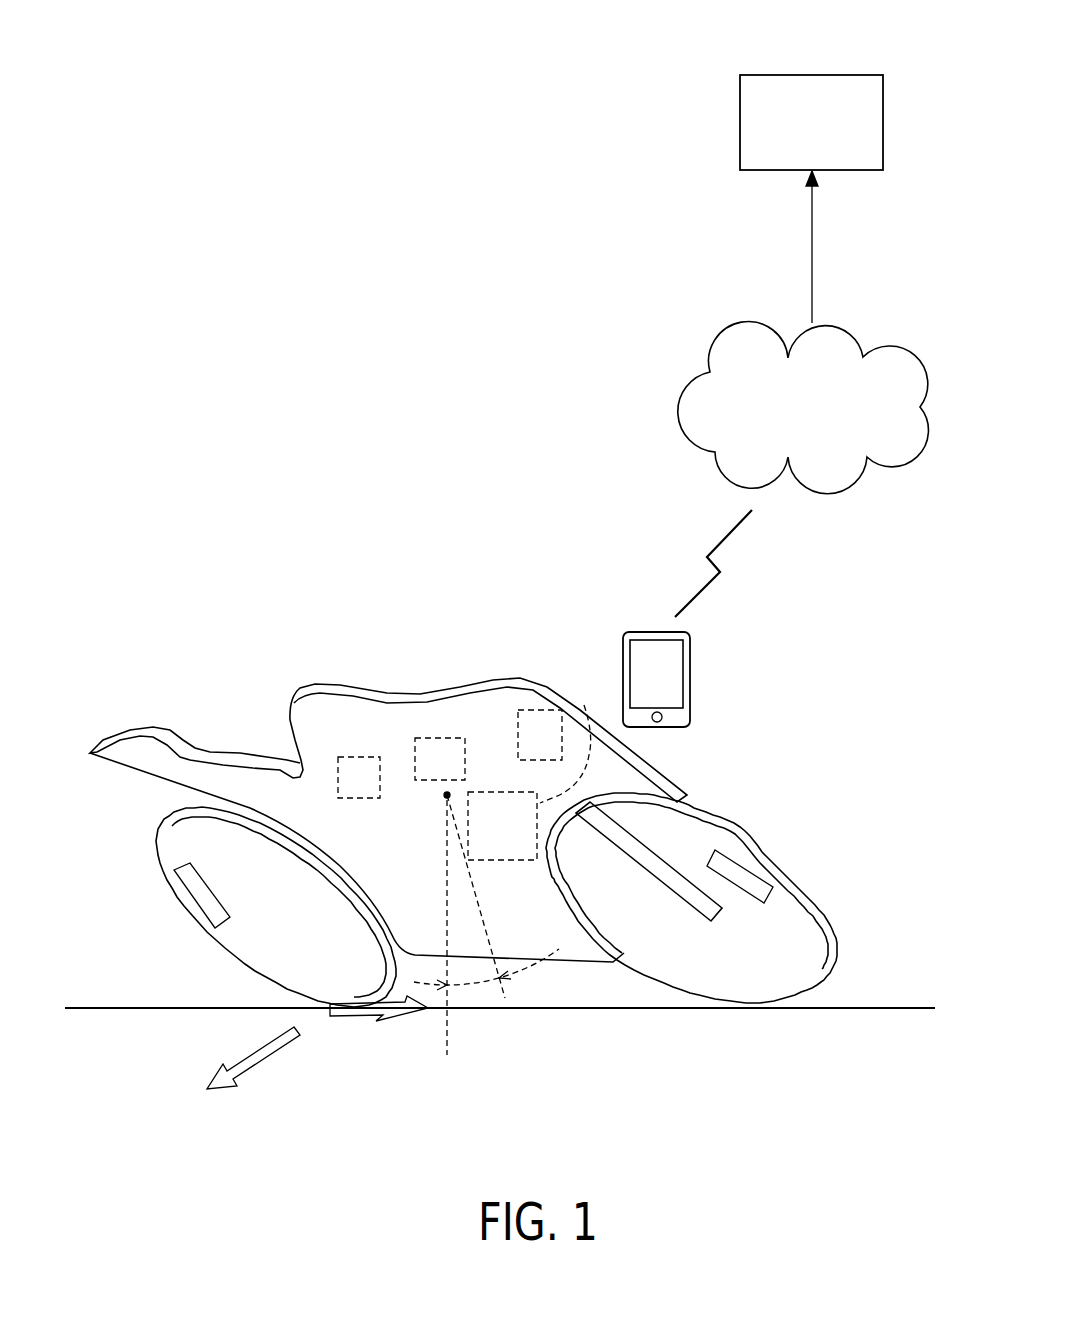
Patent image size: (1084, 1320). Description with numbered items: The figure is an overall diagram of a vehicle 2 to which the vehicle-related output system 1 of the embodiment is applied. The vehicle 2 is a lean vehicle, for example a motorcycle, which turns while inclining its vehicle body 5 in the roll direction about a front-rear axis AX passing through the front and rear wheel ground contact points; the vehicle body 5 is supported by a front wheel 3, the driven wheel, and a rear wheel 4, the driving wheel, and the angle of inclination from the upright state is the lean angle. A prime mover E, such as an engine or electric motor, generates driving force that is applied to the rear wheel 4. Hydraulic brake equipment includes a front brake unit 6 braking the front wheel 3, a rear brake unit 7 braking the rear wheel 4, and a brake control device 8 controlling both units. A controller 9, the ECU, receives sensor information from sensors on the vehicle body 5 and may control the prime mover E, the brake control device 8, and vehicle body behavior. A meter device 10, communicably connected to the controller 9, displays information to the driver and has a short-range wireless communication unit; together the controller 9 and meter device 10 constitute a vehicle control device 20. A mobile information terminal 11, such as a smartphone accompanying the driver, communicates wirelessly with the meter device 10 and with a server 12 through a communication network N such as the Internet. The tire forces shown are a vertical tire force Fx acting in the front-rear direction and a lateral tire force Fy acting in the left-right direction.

The vehicle-related output system 1 is at (564, 345).
The vehicle 2 is at (604, 620).
The front wheel 3 is at (787, 870).
The rear wheel 4 is at (156, 845).
The vehicle body 5 is at (417, 690).
The front brake unit 6 is at (752, 873).
The rear brake unit 7 is at (190, 887).
The brake control device 8 is at (360, 745).
The controller 9 is at (438, 737).
The meter device 10 is at (533, 708).
The vehicle control device 20 is at (545, 600).
The mobile information terminal 11 is at (690, 667).
The server 12 is at (847, 75).
The prime mover E is at (584, 705).
The communication network N is at (907, 473).
The front-rear axis AX is at (871, 1012).
The vertical tire force Fx is at (381, 1025).
The lateral tire force Fy is at (253, 1076).